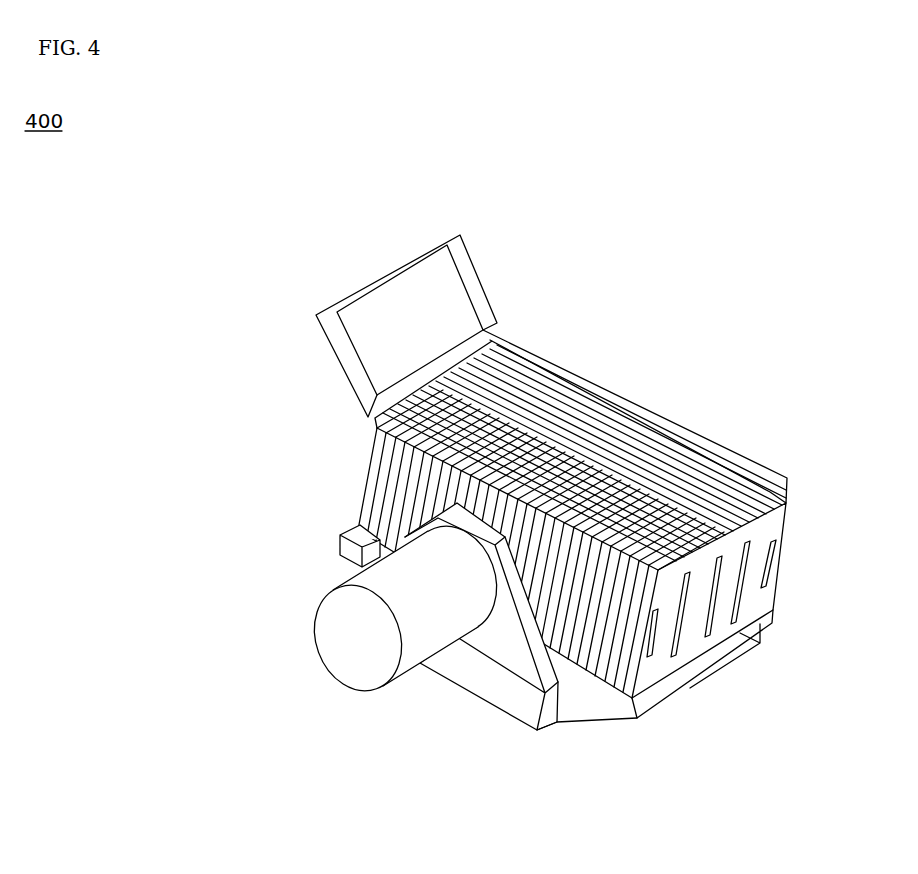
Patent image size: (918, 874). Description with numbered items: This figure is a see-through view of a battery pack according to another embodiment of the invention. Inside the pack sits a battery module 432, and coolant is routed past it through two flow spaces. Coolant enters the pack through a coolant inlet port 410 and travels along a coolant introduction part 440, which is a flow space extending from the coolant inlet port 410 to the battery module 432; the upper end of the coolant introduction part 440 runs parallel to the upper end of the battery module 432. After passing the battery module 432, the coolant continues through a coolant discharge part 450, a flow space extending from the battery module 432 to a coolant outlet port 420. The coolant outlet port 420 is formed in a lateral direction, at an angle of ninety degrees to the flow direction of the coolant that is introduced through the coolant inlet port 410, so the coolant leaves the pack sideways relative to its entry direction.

The coolant inlet port 410 is at (477, 268).
The coolant outlet port 420 is at (357, 688).
The battery module 432 is at (374, 459).
The coolant introduction part 440 is at (633, 403).
The coolant discharge part 450 is at (608, 714).